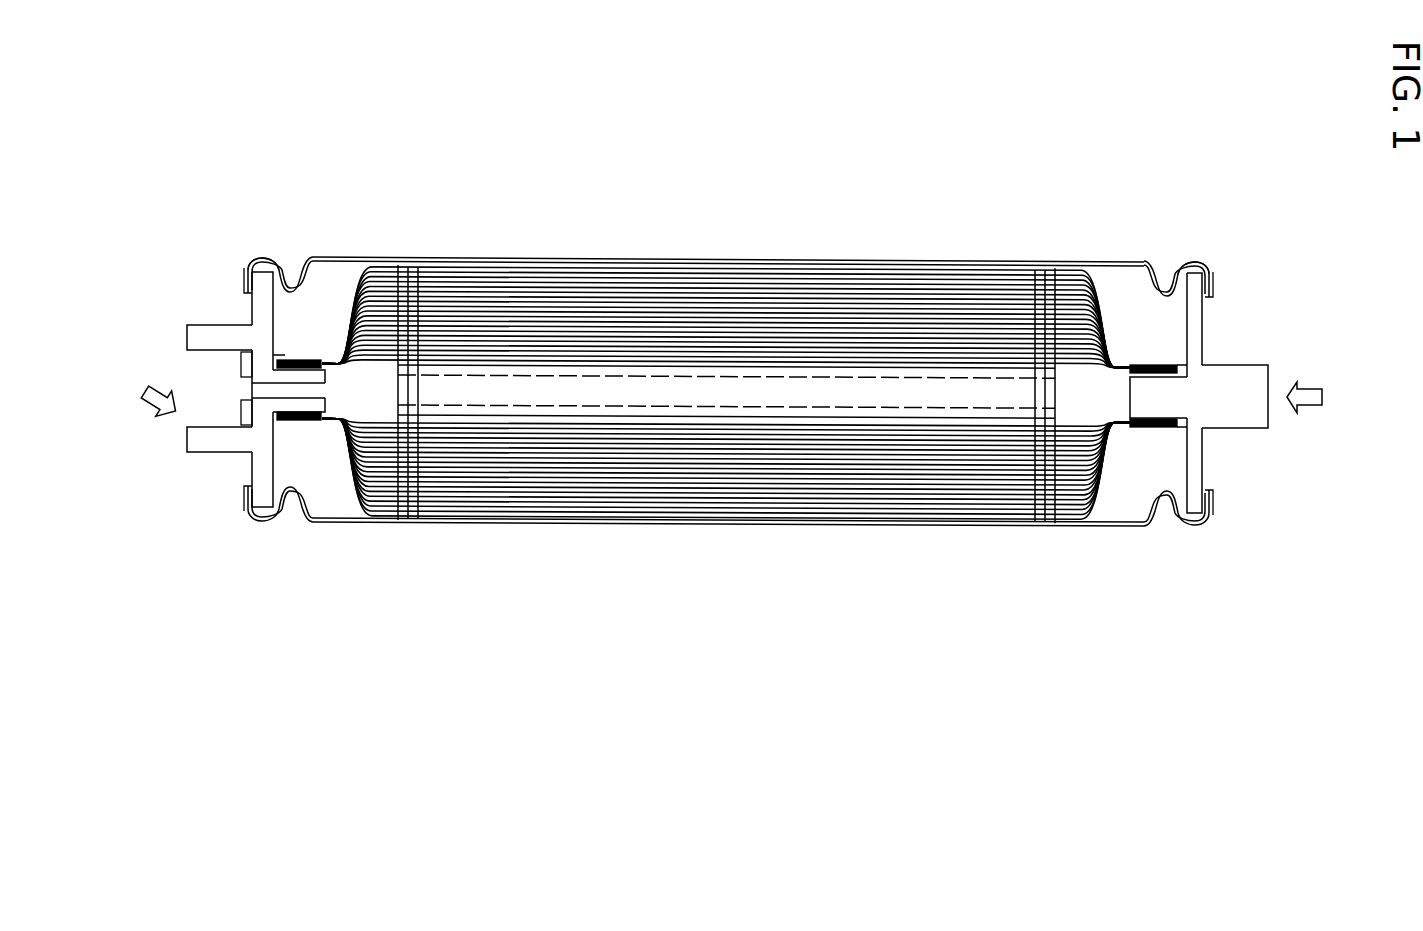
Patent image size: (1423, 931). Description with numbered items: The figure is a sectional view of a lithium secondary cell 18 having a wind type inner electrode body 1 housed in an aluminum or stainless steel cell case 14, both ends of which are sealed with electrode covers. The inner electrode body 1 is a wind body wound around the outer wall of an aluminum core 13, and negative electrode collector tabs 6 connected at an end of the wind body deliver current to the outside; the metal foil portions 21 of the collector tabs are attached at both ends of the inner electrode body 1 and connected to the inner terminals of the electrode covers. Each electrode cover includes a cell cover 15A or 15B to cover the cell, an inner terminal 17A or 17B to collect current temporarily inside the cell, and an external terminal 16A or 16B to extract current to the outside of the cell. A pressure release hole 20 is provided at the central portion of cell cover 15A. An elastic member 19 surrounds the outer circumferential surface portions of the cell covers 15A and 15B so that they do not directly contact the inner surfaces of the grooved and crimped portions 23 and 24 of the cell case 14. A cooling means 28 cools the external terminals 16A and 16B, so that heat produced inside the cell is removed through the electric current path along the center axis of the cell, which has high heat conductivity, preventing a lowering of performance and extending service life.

The inner electrode body 1 is at (706, 484).
The negative electrode collector tabs 6 is at (1137, 430).
The aluminum core 13 is at (865, 376).
The cell case 14 is at (667, 261).
The cell cover 15A is at (260, 490).
The cell cover 15B is at (1193, 296).
The external terminal 16A is at (193, 338).
The external terminal 16B is at (1240, 436).
The inner terminal 17A is at (302, 405).
The inner terminal 17B is at (1147, 392).
The lithium secondary cell 18 is at (763, 229).
The elastic member 19 is at (248, 489).
The pressure release hole 20 is at (334, 390).
The metal foil portions 21 is at (305, 363).
The grooved and crimped portion 23 is at (288, 272).
The grooved and crimped portion 24 is at (243, 258).
The cooling means 28 is at (732, 396).